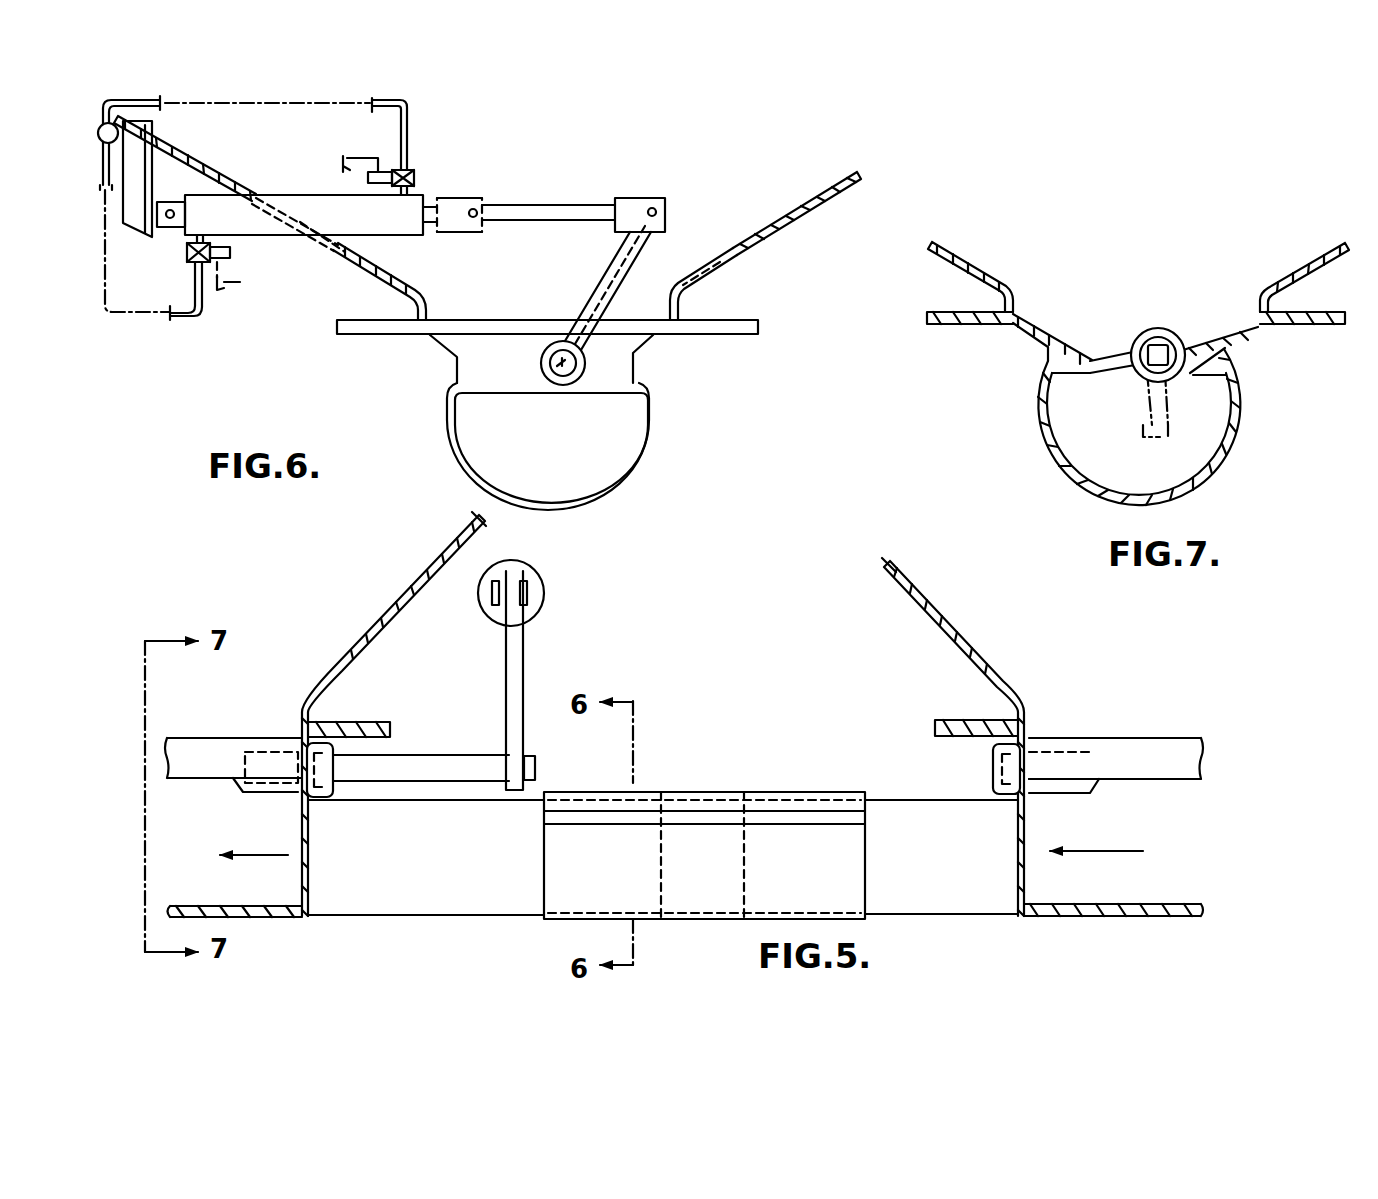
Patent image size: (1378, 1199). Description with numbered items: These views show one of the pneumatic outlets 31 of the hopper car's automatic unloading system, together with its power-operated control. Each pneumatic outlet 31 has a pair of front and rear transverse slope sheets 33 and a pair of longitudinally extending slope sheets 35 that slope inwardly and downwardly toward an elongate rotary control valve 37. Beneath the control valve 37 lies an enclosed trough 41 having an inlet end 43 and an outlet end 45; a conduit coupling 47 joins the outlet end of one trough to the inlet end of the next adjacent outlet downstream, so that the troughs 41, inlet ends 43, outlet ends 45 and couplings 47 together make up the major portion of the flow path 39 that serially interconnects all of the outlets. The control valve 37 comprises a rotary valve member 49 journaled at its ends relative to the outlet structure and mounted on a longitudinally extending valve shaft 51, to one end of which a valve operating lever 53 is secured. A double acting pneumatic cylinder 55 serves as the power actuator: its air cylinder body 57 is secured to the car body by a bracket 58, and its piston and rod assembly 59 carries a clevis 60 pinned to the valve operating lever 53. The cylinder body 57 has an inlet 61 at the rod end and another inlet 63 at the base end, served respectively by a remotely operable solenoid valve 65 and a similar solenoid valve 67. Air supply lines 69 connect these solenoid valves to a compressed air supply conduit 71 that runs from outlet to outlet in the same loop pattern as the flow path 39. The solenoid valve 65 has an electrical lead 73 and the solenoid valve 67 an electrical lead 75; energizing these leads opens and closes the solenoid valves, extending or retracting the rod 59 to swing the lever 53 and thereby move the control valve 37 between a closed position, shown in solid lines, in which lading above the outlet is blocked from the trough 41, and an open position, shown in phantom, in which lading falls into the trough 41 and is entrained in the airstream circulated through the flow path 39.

In FIG. 6, the pneumatic outlet 31 is at (777, 247).
In FIG. 7, the pneumatic outlet 31 is at (1036, 352).
In FIG. 5, the pneumatic outlet 31 is at (314, 573).
In FIG. 5, the transverse slope sheets 33 is at (440, 555).
In FIG. 6, the longitudinally extending slope sheets 35 is at (158, 136).
In FIG. 7, the longitudinally extending slope sheets 35 is at (968, 253).
In FIG. 7, the rotary control valve 37 is at (1188, 322).
In FIG. 5, the rotary control valve 37 is at (230, 726).
In FIG. 7, the flow path 39 is at (1184, 459).
In FIG. 6, the trough 41 is at (597, 468).
In FIG. 7, the trough 41 is at (1070, 438).
In FIG. 5, the trough 41 is at (243, 883).
In FIG. 5, the inlet end 43 is at (411, 893).
In FIG. 5, the outlet end 45 is at (960, 876).
In FIG. 5, the conduit coupling 47 is at (697, 890).
In FIG. 7, the rotary valve member 49 is at (1113, 353).
In FIG. 5, the rotary valve member 49 is at (238, 776).
In FIG. 6, the valve shaft 51 is at (572, 367).
In FIG. 7, the valve shaft 51 is at (1170, 383).
In FIG. 5, the valve shaft 51 is at (470, 754).
In FIG. 6, the valve operating lever 53 is at (635, 266).
In FIG. 5, the valve operating lever 53 is at (506, 683).
In FIG. 6, the double acting pneumatic cylinder 55 is at (264, 190).
In FIG. 5, the double acting pneumatic cylinder 55 is at (539, 578).
In FIG. 6, the air cylinder body 57 is at (336, 216).
In FIG. 6, the bracket 58 is at (134, 230).
In FIG. 6, the piston and rod assembly 59 is at (535, 204).
In FIG. 6, the clevis 60 is at (622, 198).
In FIG. 6, the inlet 61 is at (410, 194).
In FIG. 6, the inlet 63 is at (203, 238).
In FIG. 6, the solenoid valve 65 is at (412, 172).
In FIG. 6, the solenoid valve 67 is at (187, 254).
In FIG. 6, the air supply lines 69 is at (412, 108).
In FIG. 6, the compressed air supply conduit 71 is at (101, 140).
In FIG. 6, the electrical lead 73 is at (248, 280).
In FIG. 6, the electrical lead 75 is at (349, 168).